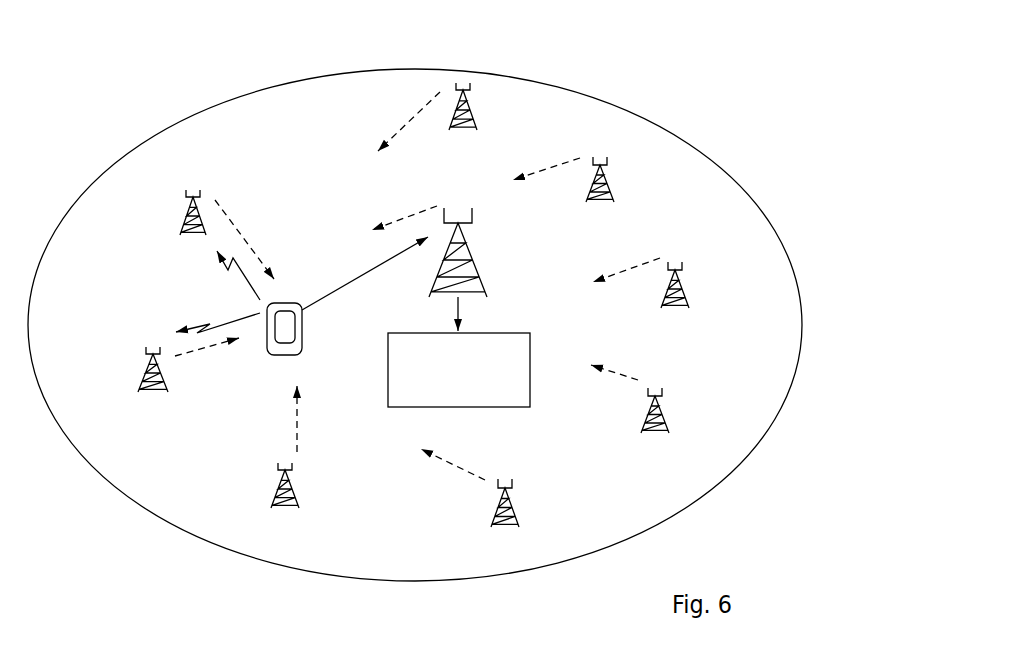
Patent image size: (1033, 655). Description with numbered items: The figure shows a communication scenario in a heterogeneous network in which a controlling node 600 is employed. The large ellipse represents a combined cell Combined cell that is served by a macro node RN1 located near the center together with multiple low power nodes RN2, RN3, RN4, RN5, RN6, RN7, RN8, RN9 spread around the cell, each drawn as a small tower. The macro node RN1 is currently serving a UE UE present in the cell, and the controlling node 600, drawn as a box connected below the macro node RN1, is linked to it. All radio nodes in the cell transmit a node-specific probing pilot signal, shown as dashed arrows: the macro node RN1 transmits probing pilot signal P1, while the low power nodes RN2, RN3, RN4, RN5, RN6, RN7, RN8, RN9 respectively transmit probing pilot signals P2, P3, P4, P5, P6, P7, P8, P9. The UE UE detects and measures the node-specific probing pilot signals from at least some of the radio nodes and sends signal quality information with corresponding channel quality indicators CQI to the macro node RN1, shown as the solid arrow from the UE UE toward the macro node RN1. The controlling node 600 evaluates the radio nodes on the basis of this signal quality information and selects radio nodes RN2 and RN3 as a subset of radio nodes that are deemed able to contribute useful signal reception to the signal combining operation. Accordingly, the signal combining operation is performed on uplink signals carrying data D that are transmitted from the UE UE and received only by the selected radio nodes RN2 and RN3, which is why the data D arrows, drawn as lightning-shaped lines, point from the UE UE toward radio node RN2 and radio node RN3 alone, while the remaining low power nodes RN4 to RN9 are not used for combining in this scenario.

The controlling node 600 is at (530, 363).
The macro node RN1 is at (470, 245).
The low power node RN2 is at (185, 213).
The low power node RN3 is at (142, 372).
The low power node RN4 is at (472, 107).
The low power node RN5 is at (607, 180).
The low power node RN6 is at (684, 288).
The low power node RN7 is at (663, 412).
The low power node RN8 is at (513, 503).
The low power node RN9 is at (293, 490).
The element UE is at (302, 336).
The element CQI is at (365, 273).
The data D is at (215, 292).
The node-specific probing pilot signal P1 is at (403, 207).
The node-specific probing pilot signal P2 is at (244, 239).
The node-specific probing pilot signal P3 is at (207, 362).
The node-specific probing pilot signal P4 is at (406, 121).
The node-specific probing pilot signal P5 is at (546, 184).
The node-specific probing pilot signal P6 is at (625, 261).
The node-specific probing pilot signal P7 is at (616, 360).
The node-specific probing pilot signal P8 is at (453, 478).
The node-specific probing pilot signal P9 is at (278, 419).
The combined cell Combined cell is at (547, 64).